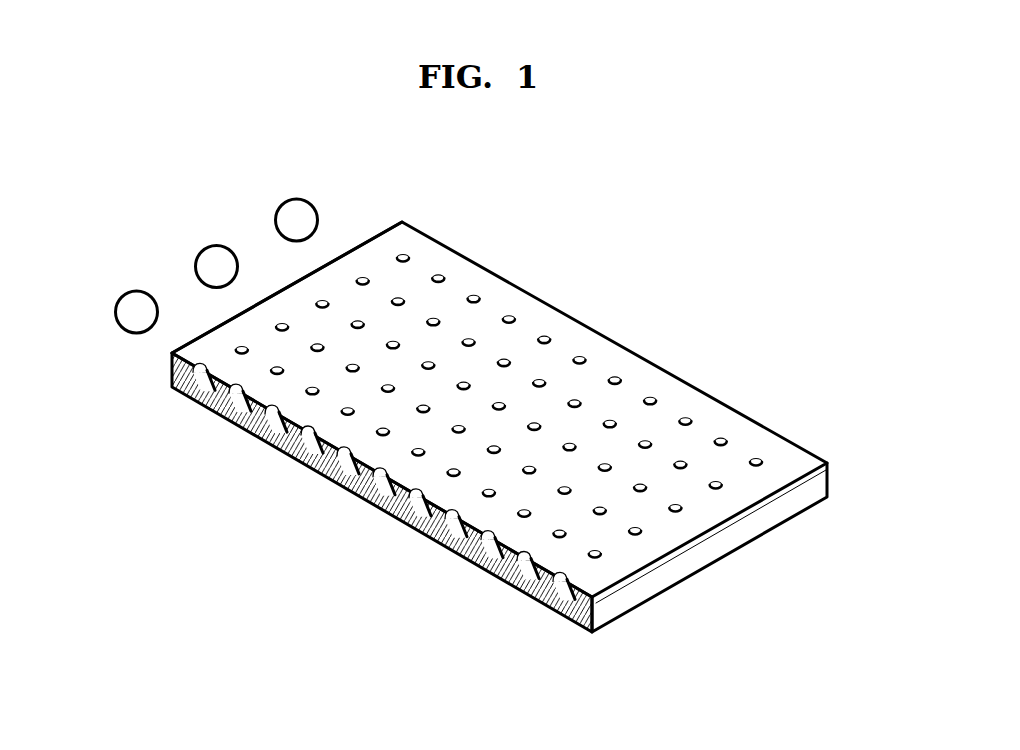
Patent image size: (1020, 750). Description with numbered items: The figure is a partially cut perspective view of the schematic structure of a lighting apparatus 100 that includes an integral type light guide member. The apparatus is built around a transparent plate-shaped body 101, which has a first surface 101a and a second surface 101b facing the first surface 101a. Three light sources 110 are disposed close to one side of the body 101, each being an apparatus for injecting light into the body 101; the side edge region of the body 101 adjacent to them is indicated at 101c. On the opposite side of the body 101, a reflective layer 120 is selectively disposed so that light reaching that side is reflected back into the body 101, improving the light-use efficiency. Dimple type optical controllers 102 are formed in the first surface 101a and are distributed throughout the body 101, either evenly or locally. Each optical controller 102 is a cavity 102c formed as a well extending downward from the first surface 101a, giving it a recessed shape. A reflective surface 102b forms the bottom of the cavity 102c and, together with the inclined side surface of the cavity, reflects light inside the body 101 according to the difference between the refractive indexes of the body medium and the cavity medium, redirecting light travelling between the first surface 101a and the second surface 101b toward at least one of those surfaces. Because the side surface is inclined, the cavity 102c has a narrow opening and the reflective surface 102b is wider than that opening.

The lighting apparatus 100 is at (732, 252).
The body 101 is at (627, 333).
The first surface 101a is at (406, 471).
The second surface 101b is at (450, 553).
The edge of the light guide plate 101c is at (375, 237).
The optical controllers 102 is at (293, 557).
The reflective surface 102b is at (270, 437).
The cavity 102c is at (278, 440).
The light sources 110 is at (308, 175).
The reflective layer 120 is at (735, 542).